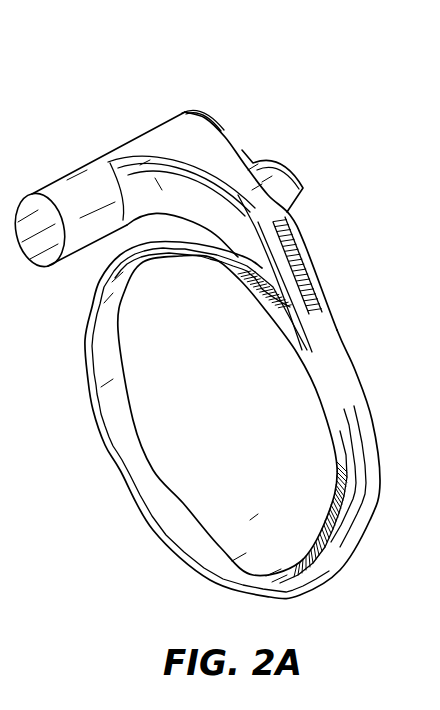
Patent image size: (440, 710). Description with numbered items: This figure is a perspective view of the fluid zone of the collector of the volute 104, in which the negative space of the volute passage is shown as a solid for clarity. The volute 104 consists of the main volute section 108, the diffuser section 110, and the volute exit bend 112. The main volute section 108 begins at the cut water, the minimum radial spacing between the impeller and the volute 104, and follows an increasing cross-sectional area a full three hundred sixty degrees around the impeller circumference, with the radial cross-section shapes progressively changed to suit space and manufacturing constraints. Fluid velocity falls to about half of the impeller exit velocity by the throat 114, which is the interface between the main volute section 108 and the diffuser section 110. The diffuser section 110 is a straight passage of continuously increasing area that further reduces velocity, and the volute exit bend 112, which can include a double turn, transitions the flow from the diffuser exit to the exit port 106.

The volute 104 is at (229, 104).
The exit port 106 is at (33, 190).
The main volute section 108 is at (185, 503).
The diffuser section 110 is at (307, 267).
The volute exit bend 112 is at (233, 159).
The throat 114 is at (338, 330).